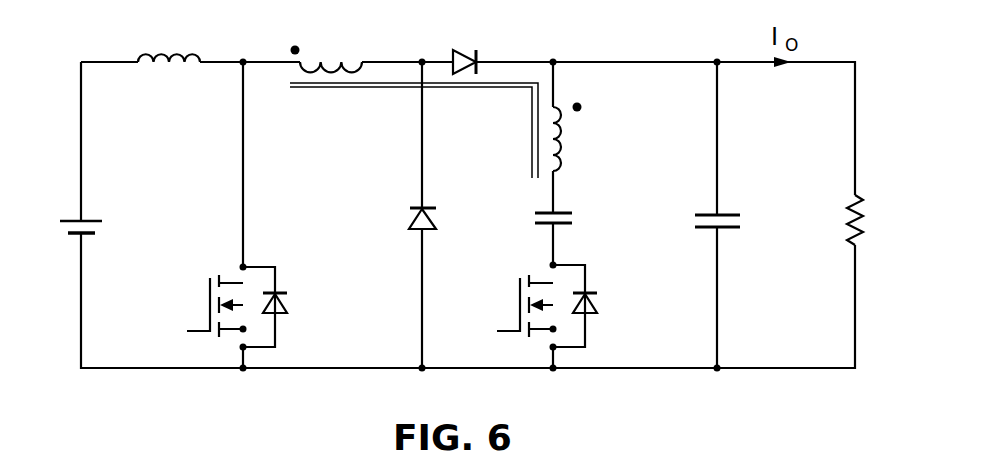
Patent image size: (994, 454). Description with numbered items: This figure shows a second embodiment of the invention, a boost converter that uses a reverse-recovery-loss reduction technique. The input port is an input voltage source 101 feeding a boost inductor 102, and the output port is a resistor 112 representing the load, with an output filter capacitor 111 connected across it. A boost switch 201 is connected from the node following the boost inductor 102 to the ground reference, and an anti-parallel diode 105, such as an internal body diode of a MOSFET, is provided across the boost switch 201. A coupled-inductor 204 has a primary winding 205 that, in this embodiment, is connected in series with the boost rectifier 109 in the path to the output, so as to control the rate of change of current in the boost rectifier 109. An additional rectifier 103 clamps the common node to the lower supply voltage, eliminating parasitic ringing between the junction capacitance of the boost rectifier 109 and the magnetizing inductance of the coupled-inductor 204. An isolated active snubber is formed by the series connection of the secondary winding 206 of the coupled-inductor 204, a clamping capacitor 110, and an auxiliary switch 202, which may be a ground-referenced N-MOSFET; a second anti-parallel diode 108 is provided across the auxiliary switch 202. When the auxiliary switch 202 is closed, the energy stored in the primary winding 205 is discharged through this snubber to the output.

The input voltage source 101 is at (95, 221).
The boost inductor 102 is at (189, 53).
The additional rectifier 103 is at (412, 232).
The anti-parallel diode 105 is at (288, 302).
The anti-parallel diode 108 is at (598, 308).
The boost rectifier 109 is at (478, 53).
The clamping capacitor 110 is at (568, 213).
The output filter capacitor 111 is at (727, 214).
The resistor 112 is at (858, 197).
The boost switch 201 is at (187, 333).
The auxiliary switch 202 is at (498, 333).
The coupled-inductor 204 is at (480, 115).
The primary winding 205 is at (328, 59).
The secondary winding 206 is at (564, 122).